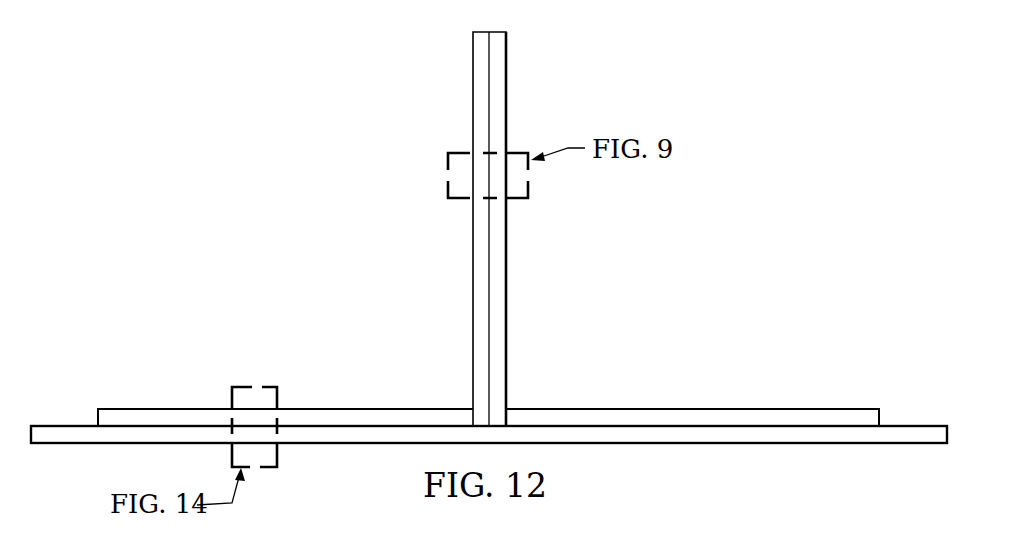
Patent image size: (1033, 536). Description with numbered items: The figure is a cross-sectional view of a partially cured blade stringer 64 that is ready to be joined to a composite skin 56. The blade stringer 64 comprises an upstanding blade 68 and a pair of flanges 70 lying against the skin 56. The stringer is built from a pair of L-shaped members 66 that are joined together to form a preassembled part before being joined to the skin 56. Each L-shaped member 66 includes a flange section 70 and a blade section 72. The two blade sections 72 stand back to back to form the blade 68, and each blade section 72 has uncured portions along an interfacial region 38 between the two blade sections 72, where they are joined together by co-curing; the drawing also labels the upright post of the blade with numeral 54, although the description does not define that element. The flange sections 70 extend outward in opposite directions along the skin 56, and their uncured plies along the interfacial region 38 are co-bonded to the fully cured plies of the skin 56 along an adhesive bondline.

The interfacial region 38 is at (490, 125).
The upright post 54 is at (472, 232).
The composite skin 56 is at (65, 426).
The blade stringer 64 is at (623, 263).
The L-shaped member 66 is at (343, 409).
The blade 68 is at (488, 92).
The flange section 70 is at (165, 409).
The blade section 72 is at (473, 355).